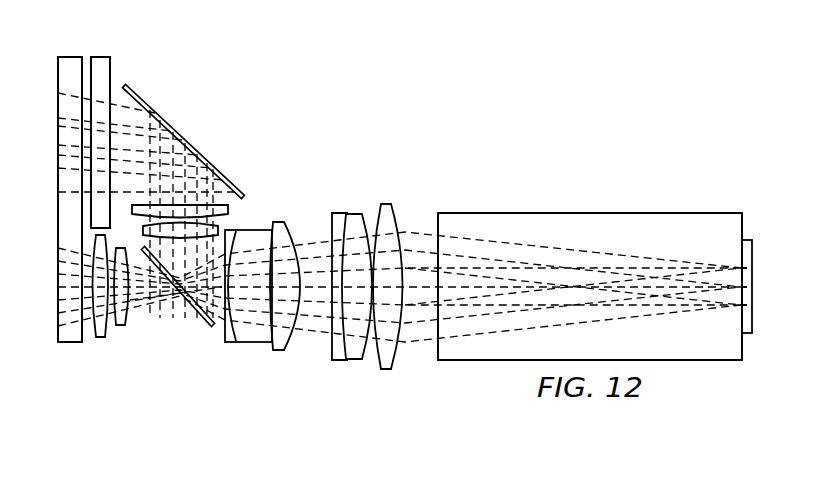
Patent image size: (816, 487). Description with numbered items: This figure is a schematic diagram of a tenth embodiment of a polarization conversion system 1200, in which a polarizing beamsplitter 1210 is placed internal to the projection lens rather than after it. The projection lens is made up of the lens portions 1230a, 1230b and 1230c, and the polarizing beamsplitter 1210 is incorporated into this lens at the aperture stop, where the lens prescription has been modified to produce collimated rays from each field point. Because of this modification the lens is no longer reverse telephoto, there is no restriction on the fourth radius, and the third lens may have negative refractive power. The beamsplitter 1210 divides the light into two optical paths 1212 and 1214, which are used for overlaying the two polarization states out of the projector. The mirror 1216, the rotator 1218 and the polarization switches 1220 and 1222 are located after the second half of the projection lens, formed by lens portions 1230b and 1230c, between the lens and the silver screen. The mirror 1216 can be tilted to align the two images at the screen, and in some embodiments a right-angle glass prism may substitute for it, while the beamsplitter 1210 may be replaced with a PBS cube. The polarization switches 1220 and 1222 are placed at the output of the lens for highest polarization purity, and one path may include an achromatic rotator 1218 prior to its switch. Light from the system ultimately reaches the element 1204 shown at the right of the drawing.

The polarization conversion system 1200 is at (502, 83).
The image sensor 1204 is at (743, 240).
The polarizing beamsplitter 1210 is at (208, 328).
The optical path 1212 is at (165, 322).
The optical path 1214 is at (190, 247).
The mirror 1216 is at (178, 134).
The rotator 1218 is at (103, 57).
The polarization switch 1220 is at (65, 57).
The polarization switch 1222 is at (63, 343).
The lens portion 1230a is at (402, 374).
The lens portion 1230b is at (113, 343).
The lens portion 1230c is at (237, 217).